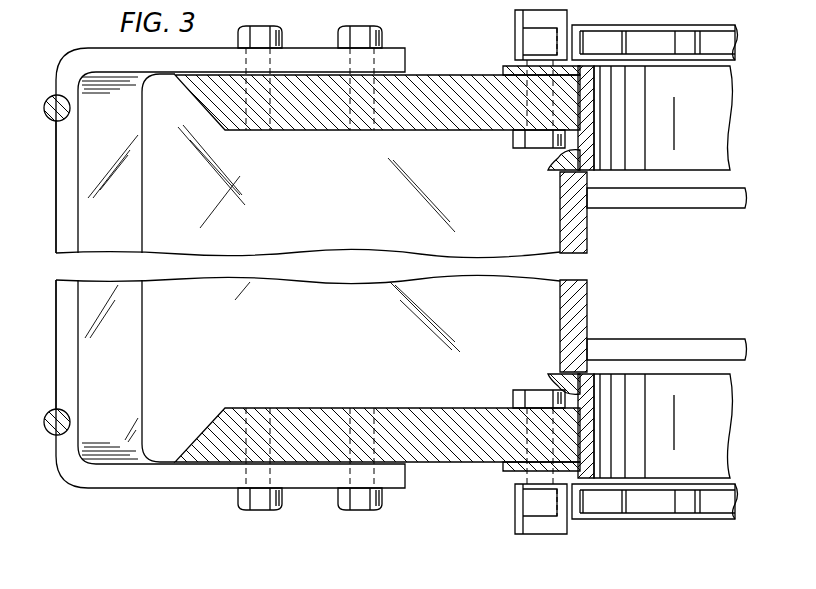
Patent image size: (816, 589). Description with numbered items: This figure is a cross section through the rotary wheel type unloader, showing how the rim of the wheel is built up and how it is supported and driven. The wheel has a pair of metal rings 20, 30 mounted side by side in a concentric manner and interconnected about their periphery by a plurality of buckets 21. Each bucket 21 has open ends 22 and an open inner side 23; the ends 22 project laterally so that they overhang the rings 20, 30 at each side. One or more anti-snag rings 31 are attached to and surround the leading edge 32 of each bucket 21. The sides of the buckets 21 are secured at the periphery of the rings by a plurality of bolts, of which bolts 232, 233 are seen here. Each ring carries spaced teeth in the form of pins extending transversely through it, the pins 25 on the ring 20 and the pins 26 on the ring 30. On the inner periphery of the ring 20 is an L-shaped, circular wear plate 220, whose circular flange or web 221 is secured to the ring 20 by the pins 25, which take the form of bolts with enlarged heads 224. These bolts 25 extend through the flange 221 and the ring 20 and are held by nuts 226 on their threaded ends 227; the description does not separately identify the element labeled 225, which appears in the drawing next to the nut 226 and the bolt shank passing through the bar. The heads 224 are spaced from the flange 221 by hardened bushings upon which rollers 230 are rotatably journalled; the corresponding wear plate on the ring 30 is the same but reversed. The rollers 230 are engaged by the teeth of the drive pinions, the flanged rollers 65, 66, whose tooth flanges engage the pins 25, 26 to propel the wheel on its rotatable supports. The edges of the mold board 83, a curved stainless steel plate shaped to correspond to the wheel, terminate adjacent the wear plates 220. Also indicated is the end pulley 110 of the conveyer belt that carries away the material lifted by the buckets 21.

The metal ring 20 is at (498, 456).
The bucket 21 is at (230, 295).
The open end of bucket 22 is at (168, 478).
The open inner side of bucket 23 is at (366, 323).
The tooth (pin/bolt) 25 is at (609, 522).
The tooth (pin) 26 is at (598, 294).
The metal ring 30 is at (462, 95).
The anti-snag ring 31 is at (54, 95).
The leading edge of bucket 32 is at (62, 210).
The flanged roller (drive pinion) 65 is at (740, 500).
The flanged roller (drive pinion) 66 is at (740, 46).
The mold board 83 is at (587, 318).
The end pulley 110 is at (710, 208).
The L-shaped wear plate 220 is at (598, 150).
The circular flange (web) 221 is at (508, 472).
The enlarged bolt head 224 is at (572, 24).
The bolt 225 is at (500, 132).
The nut 226 is at (545, 150).
The threaded end of bolt 227 is at (527, 150).
The roller 230 is at (515, 32).
The bolt 232 is at (262, 16).
The bolt 233 is at (360, 26).